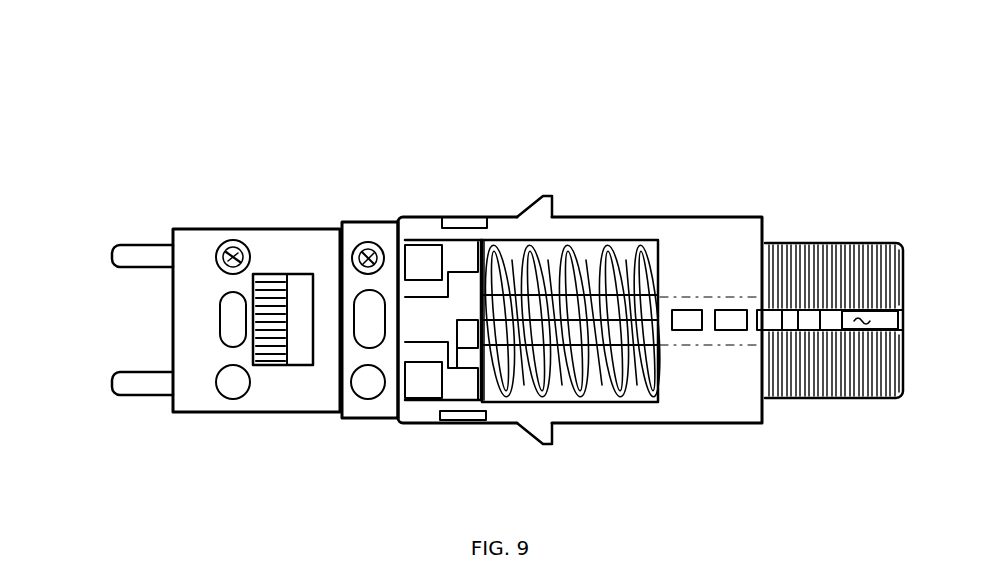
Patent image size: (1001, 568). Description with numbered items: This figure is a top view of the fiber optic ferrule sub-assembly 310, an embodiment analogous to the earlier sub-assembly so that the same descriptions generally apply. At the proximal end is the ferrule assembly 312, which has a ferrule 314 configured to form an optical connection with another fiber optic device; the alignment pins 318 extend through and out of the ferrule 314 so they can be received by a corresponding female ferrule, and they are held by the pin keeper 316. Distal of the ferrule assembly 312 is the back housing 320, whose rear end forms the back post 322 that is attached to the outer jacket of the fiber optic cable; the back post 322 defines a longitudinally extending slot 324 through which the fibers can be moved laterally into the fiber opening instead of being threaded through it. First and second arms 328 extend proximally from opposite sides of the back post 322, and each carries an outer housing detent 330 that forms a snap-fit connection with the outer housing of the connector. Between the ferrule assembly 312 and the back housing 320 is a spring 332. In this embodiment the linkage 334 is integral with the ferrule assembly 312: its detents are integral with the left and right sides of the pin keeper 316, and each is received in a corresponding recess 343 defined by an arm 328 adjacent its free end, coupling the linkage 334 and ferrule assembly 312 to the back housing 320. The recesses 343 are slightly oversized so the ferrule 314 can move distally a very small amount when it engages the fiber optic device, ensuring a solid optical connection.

The fiber optic ferrule sub-assembly 310 is at (626, 76).
The ferrule assembly 312 is at (323, 196).
The ferrule 314 is at (201, 250).
The pin keeper 316 is at (410, 236).
The alignment pins 318 is at (98, 320).
The back housing 320 is at (731, 146).
The back post 322 is at (818, 258).
The slot 324 is at (862, 318).
The arms 328 is at (600, 215).
The outer housing detents 330 is at (546, 198).
The spring 332 is at (619, 238).
The linkage 334 is at (439, 399).
The recesses 343 is at (462, 217).